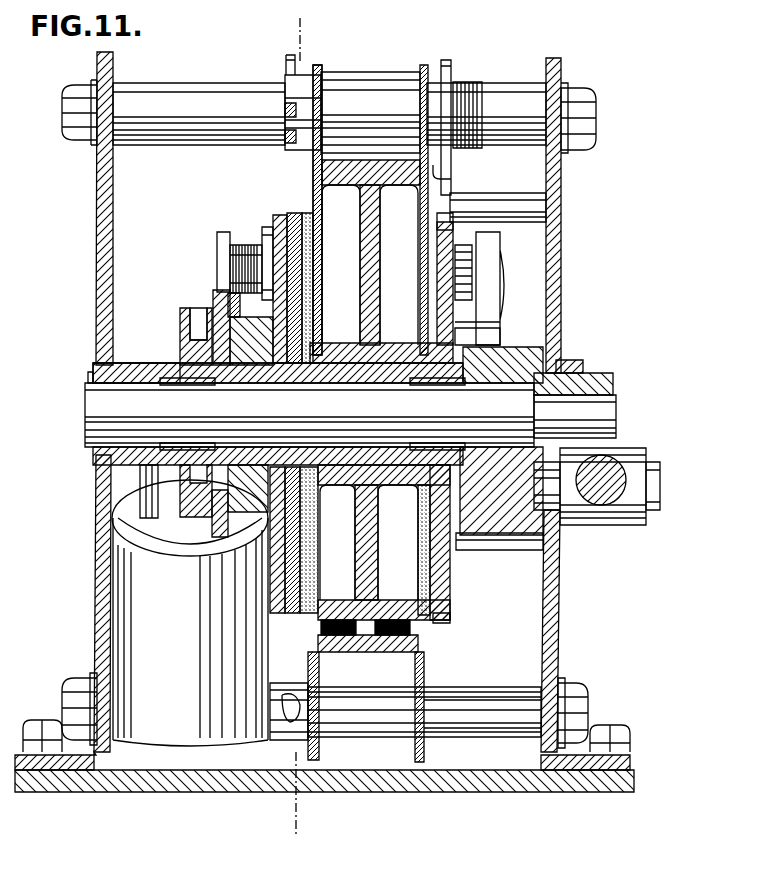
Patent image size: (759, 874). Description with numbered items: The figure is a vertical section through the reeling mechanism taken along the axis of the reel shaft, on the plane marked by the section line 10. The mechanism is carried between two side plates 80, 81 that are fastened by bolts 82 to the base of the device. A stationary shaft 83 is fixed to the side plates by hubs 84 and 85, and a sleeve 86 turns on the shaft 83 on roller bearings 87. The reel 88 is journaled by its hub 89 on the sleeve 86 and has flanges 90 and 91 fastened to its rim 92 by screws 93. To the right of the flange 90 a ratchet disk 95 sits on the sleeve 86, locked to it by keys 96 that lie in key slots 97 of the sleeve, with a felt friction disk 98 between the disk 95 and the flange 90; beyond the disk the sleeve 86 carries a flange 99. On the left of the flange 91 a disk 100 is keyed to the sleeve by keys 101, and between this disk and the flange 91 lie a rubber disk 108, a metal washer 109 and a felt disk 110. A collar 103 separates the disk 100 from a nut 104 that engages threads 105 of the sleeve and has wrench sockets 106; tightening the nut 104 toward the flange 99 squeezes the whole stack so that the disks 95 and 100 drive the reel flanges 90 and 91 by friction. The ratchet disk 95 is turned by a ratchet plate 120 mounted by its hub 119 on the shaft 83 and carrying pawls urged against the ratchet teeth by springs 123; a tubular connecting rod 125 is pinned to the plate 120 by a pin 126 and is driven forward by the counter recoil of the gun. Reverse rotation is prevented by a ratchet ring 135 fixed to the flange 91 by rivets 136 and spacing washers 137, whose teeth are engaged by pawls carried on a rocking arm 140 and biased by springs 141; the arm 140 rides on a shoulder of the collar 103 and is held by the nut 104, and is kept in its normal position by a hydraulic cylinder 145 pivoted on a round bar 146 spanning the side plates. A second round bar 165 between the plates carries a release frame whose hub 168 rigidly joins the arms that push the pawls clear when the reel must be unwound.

The section line 10 is at (342, 33).
The side plate 80 is at (97, 582).
The side plate 81 is at (550, 615).
The bolts 82 is at (45, 722).
The stationary shaft 83 is at (88, 400).
The hub 84 is at (90, 374).
The hub 85 is at (586, 372).
The sleeve 86 is at (345, 482).
The roller bearings 87 is at (180, 384).
The reel 88 is at (368, 280).
The hub 89 is at (388, 345).
The flange 90 is at (425, 672).
The flange 91 is at (320, 672).
The rim 92 is at (374, 656).
The screws 93 is at (318, 632).
The ratchet disk 95 is at (455, 215).
The keys 96 is at (496, 323).
The key slots 97 is at (336, 363).
The felt friction disk 98 is at (432, 263).
The flange 99 is at (503, 548).
The disk 100 is at (283, 218).
The keys 101 is at (262, 322).
The collar 103 is at (242, 537).
The nut 104 is at (182, 320).
The threads 105 is at (178, 363).
The wrench sockets 106 is at (196, 316).
The rubber disk 108 is at (294, 215).
The metal washer 109 is at (307, 215).
The felt disk 110 is at (318, 252).
The hub 119 is at (536, 365).
The ratchet plate 120 is at (491, 305).
The springs 123 is at (475, 270).
The tubular connecting rod 125 is at (600, 497).
The pin 126 is at (657, 485).
The ratchet ring 135 is at (283, 97).
The rivets 136 is at (283, 113).
The spacing washers 137 is at (303, 117).
The rocking arm 140 is at (215, 292).
The springs 141 is at (240, 250).
The cylinder 145 is at (132, 628).
The round bar 146 is at (492, 712).
The round bar 165 is at (503, 95).
The hub 168 is at (385, 92).